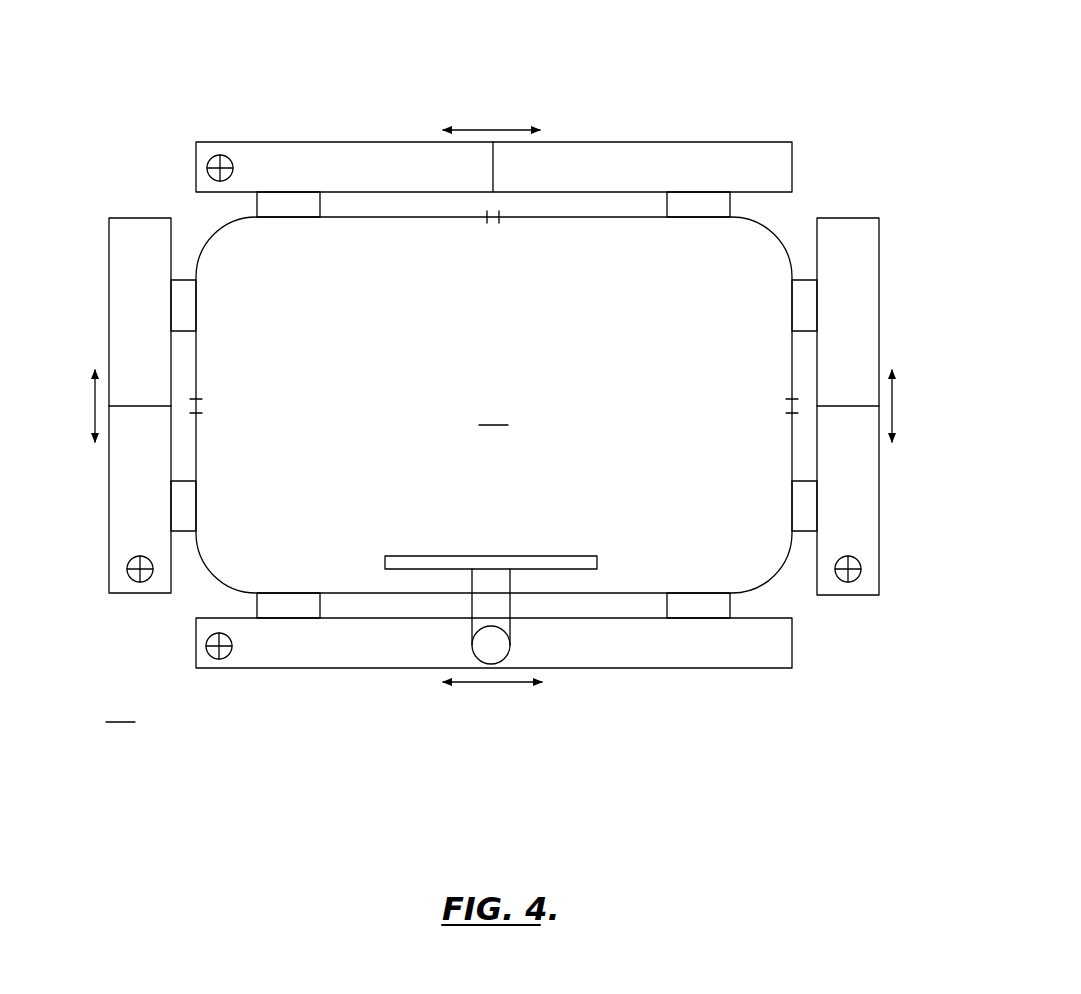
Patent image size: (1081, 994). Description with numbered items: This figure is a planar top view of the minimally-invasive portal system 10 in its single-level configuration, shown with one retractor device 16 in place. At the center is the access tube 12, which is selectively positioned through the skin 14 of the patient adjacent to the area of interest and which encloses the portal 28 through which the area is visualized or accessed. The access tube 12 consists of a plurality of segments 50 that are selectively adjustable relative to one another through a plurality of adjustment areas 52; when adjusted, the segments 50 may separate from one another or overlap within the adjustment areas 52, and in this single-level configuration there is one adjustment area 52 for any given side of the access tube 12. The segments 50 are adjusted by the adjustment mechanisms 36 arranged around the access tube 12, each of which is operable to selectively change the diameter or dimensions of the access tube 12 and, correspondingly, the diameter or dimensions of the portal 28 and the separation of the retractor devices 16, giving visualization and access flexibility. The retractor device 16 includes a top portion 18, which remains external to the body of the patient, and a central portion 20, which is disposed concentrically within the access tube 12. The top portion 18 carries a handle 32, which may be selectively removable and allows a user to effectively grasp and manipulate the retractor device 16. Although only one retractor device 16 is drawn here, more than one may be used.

The minimally-invasive portal system 10 is at (932, 233).
The access tube 12 is at (768, 230).
The skin 14 is at (121, 710).
The retractor device 16 is at (544, 596).
The top portion 18 is at (490, 583).
The central portion 20 is at (583, 576).
The portal 28 is at (494, 413).
The handle 32 is at (495, 655).
The adjustment mechanism 36 is at (733, 143).
The segment 50 is at (345, 217).
The adjustment area 52 is at (495, 205).